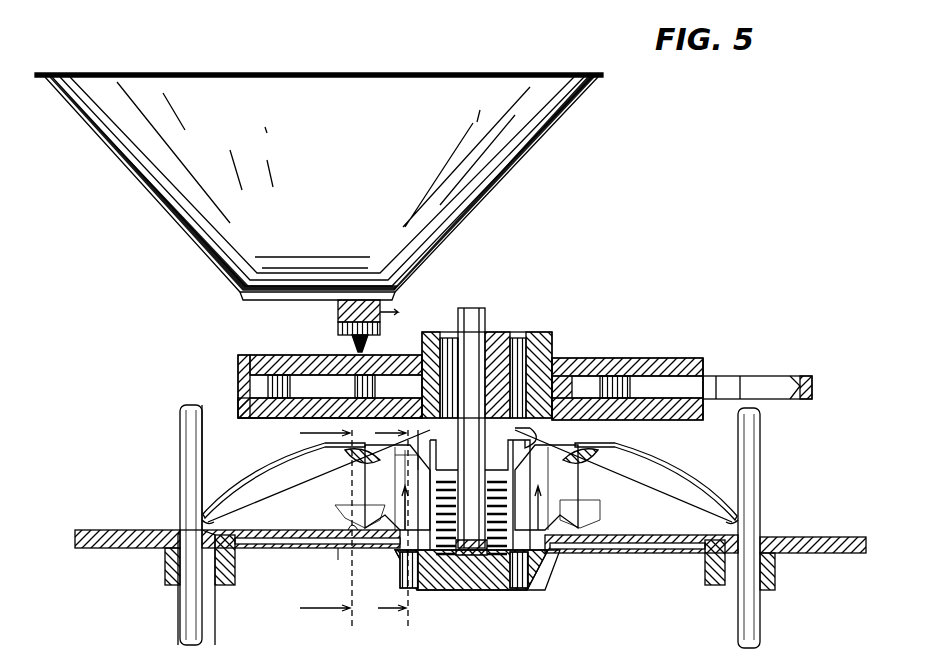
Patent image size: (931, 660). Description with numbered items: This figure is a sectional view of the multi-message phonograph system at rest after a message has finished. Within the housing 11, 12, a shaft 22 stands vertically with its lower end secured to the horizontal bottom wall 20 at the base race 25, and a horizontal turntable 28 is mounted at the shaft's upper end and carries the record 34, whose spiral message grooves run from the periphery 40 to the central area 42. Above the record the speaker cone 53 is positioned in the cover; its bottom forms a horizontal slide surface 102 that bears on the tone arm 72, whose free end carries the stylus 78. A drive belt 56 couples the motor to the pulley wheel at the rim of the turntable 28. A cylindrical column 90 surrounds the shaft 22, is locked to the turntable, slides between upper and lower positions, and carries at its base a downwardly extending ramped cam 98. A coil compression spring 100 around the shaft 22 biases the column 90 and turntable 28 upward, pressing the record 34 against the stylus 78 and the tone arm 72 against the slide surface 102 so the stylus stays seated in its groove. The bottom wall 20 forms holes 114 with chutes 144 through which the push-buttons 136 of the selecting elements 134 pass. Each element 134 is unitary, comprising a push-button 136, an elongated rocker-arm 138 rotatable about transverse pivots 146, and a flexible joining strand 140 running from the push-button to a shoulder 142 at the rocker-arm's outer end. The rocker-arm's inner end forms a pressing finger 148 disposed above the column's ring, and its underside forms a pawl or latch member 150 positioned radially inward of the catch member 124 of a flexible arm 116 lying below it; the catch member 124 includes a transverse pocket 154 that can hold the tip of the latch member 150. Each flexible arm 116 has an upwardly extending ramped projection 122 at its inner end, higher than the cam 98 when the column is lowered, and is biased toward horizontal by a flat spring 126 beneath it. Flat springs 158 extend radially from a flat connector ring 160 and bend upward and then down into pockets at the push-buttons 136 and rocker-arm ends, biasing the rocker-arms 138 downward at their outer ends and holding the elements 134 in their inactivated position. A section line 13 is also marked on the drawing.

The housing 11 is at (313, 528).
The housing 12 is at (383, 529).
The section line 13 is at (461, 508).
The bottom wall 20 is at (112, 530).
The shaft 22 is at (466, 306).
The base race 25 is at (500, 592).
The turntable 28 is at (240, 408).
The record 34 is at (238, 361).
The periphery 40 is at (700, 358).
The central area 42 is at (605, 358).
The speaker cone 53 is at (150, 192).
The drive belt 56 is at (772, 376).
The tone arm 72 is at (338, 312).
The stylus 78 is at (355, 345).
The cylindrical column 90 is at (497, 332).
The ramped cam 98 is at (396, 490).
The coil compression spring 100 is at (537, 586).
The slide edge surface 102 is at (252, 298).
The holes 114 is at (178, 530).
The flexible arms 116 is at (312, 548).
The ramped projection 122 is at (428, 590).
The catch member 124 is at (372, 548).
The flat springs 126 is at (258, 555).
The selecting element 134 is at (170, 435).
The push-button 136 is at (180, 626).
The rocker-arm 138 is at (364, 509).
The joining strand 140 is at (204, 437).
The shoulder 142 is at (220, 528).
The chute 144 is at (168, 578).
The pivots 146 is at (476, 487).
The pressing finger 148 is at (535, 445).
The latch member 150 is at (608, 514).
The transverse pocket 154 is at (342, 548).
The flat springs 158 is at (278, 461).
The flat connector ring 160 is at (610, 447).